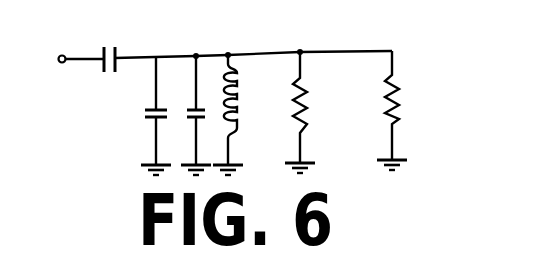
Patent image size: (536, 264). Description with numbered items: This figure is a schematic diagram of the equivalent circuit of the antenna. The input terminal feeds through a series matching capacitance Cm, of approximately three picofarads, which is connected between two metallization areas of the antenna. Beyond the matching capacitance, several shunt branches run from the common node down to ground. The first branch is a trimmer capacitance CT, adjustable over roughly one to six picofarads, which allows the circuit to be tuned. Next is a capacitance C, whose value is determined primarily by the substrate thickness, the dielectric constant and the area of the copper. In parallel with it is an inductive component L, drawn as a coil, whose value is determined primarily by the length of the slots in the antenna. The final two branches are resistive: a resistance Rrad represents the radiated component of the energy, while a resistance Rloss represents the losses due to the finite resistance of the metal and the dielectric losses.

The series matching capacitance Cm is at (141, 40).
The trimmer capacitance CT is at (128, 116).
The capacitance C is at (189, 114).
The inductive component L is at (241, 113).
The radiation resistance Rrad is at (334, 111).
The loss resistance Rloss is at (432, 110).